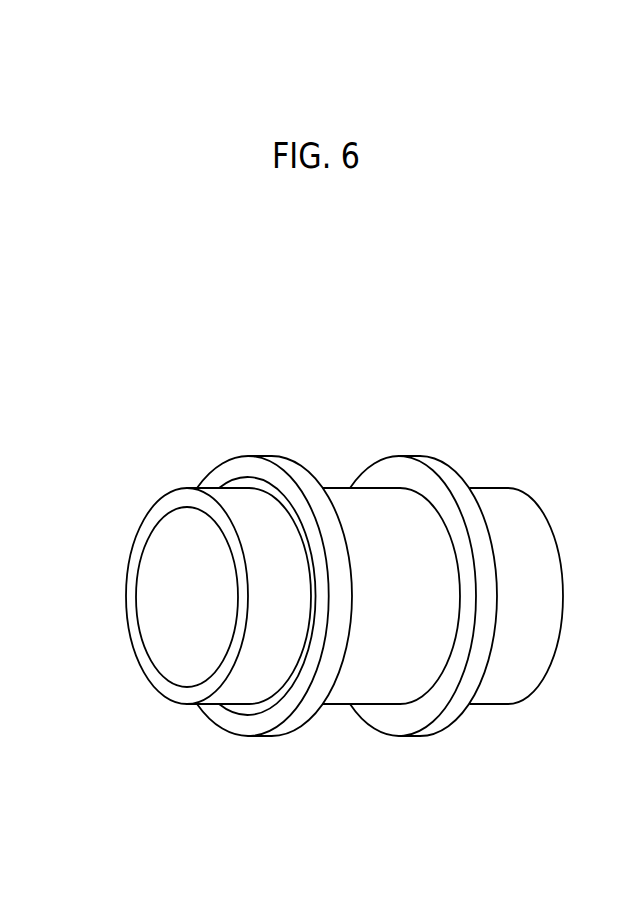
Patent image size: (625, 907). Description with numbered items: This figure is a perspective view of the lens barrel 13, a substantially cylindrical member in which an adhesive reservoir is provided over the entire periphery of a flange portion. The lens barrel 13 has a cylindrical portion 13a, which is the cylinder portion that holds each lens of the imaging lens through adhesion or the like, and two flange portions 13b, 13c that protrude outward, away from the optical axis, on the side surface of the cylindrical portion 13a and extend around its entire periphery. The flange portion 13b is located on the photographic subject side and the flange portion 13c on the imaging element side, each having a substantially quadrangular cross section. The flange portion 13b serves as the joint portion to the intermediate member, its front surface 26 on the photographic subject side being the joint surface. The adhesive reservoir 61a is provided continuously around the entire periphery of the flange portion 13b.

The lens barrel 13 is at (94, 327).
The cylindrical portion 13a is at (497, 690).
The flange portion 13b is at (288, 472).
The flange portion 13c is at (442, 473).
The front surface 26 is at (265, 477).
The adhesive reservoir 61a is at (310, 558).